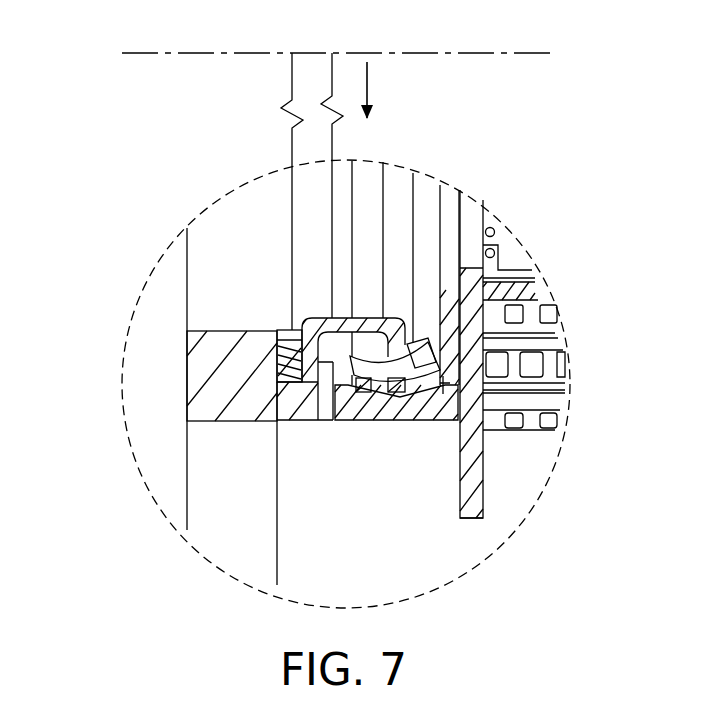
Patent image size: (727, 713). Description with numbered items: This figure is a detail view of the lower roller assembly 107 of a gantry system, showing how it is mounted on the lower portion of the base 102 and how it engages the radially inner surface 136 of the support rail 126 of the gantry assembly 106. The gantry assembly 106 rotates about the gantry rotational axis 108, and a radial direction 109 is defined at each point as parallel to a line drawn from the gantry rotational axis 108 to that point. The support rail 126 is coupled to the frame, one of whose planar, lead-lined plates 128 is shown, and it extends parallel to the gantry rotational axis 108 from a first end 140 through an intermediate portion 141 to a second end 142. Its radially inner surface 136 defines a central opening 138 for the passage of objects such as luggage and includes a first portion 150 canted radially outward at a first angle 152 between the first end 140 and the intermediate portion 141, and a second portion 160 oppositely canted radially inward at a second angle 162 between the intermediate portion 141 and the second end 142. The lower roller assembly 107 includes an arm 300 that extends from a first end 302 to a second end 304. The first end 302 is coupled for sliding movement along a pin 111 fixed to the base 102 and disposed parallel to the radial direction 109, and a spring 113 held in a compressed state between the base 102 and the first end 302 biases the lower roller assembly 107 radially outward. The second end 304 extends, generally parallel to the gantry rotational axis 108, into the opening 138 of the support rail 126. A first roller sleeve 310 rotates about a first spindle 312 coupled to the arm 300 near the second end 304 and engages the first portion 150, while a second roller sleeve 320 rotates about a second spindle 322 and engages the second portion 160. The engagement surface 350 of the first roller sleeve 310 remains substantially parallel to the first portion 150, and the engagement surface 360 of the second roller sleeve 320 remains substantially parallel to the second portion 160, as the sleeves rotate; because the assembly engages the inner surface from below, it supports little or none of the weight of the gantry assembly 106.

The base 102 is at (187, 295).
The gantry assembly 106 is at (548, 151).
The lower roller assembly 107 is at (350, 499).
The gantry rotational axis 108 is at (532, 53).
The radial direction 109 is at (370, 72).
The pin 111 is at (330, 345).
The spring 113 is at (320, 368).
The support rail 126 is at (402, 182).
The plate 128 is at (470, 520).
The radially inner surface 136 is at (408, 205).
The central opening 138 is at (414, 242).
The first end 140 is at (337, 428).
The intermediate portion 141 is at (397, 430).
The second end 142 is at (453, 435).
The first portion 150 is at (300, 348).
The first angle 152 is at (345, 380).
The second portion 160 is at (440, 358).
The second angle 162 is at (450, 382).
The arm 300 is at (320, 322).
The first end 302 is at (288, 430).
The second end 304 is at (408, 402).
The first roller sleeve 310 is at (356, 352).
The first spindle 312 is at (352, 318).
The second roller sleeve 320 is at (405, 335).
The second spindle 322 is at (425, 378).
The engagement surface 350 is at (300, 336).
The engagement surface 360 is at (445, 372).